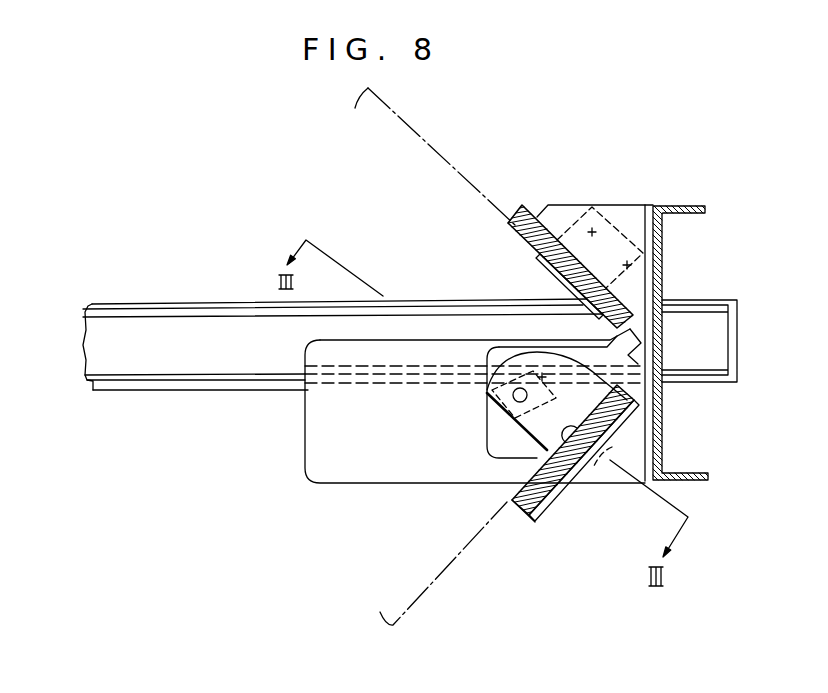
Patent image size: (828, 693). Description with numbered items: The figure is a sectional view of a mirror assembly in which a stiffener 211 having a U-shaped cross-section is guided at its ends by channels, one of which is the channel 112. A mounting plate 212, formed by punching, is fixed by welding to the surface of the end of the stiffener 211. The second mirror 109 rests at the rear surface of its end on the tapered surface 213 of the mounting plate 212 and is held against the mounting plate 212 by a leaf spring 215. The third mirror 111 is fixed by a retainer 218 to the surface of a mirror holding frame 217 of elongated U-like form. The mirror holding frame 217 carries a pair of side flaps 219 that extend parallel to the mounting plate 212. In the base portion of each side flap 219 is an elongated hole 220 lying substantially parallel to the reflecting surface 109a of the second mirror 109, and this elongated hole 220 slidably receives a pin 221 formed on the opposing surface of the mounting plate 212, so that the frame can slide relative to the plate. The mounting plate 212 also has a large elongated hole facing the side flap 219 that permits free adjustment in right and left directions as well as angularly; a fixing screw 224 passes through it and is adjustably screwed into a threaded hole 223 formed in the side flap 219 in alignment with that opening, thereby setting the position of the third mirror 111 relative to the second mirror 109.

The second mirror 109 is at (517, 208).
The reflecting surface 109a is at (522, 236).
The third mirror 111 is at (548, 512).
The channel 112 is at (137, 388).
The stiffener 211 is at (657, 252).
The mounting plate 212 is at (603, 218).
The tapered surface 213 is at (529, 206).
The leaf spring 215 is at (583, 270).
The mirror holding frame 217 is at (588, 473).
The retainer 218 is at (533, 453).
The side flap 219 is at (497, 437).
The elongated hole 220 is at (631, 398).
The pin 221 is at (612, 447).
The threaded hole 223 is at (490, 392).
The fixing screw 224 is at (490, 408).